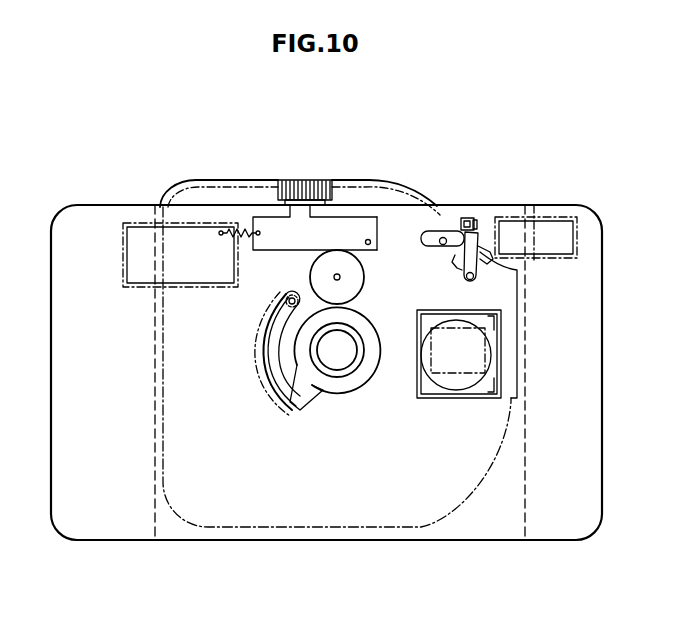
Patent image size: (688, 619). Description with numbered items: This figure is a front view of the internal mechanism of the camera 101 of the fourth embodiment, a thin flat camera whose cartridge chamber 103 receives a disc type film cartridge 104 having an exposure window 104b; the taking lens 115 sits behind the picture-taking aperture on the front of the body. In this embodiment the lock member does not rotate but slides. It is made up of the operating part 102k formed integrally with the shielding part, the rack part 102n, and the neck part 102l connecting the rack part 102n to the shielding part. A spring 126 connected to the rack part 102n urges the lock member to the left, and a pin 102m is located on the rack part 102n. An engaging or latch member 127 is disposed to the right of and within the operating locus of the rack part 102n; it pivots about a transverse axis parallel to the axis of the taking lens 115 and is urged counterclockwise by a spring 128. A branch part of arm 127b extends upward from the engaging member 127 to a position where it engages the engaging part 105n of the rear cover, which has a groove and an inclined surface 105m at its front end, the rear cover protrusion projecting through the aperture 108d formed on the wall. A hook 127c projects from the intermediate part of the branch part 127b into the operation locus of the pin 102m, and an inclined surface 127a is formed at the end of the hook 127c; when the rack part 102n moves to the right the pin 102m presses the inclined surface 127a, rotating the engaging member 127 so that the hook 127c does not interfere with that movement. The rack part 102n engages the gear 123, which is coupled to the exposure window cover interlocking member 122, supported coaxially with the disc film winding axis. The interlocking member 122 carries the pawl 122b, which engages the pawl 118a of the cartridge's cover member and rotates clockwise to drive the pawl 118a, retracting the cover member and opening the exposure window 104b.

The camera 101 is at (48, 207).
The cartridge chamber 103 is at (160, 541).
The film cartridge 104 is at (209, 529).
The exposure window 104b is at (470, 400).
The taking lens 115 is at (452, 390).
The pawl of the cover member 118a is at (284, 296).
The exposure window cover interlocking member 122 is at (337, 393).
The pawl 122b is at (270, 309).
The gear 123 is at (362, 286).
The spring 126 is at (246, 231).
The operating part 102k is at (342, 182).
The neck part 102l is at (284, 216).
The pin 102m is at (367, 239).
The rack part 102n is at (378, 250).
The engaging part 105n is at (461, 222).
The inclined surface 105m is at (476, 222).
The aperture 108d is at (462, 217).
The engaging member 127 is at (479, 240).
The inclined surface 127a is at (425, 244).
The branch part of arm 127b is at (479, 236).
The hook 127c is at (444, 246).
The spring 128 is at (477, 281).